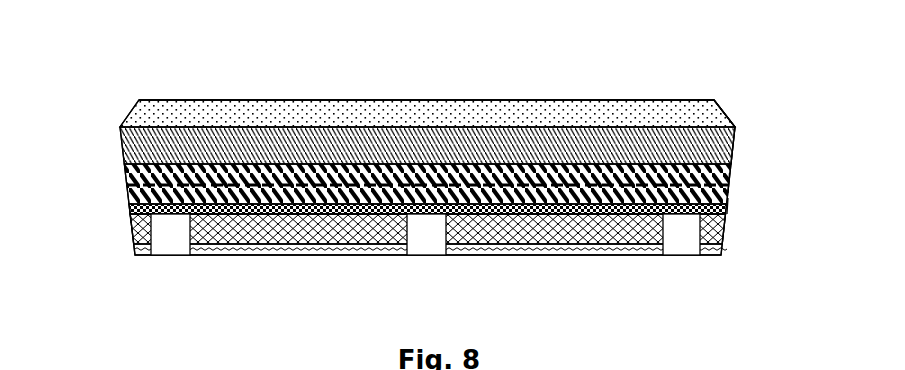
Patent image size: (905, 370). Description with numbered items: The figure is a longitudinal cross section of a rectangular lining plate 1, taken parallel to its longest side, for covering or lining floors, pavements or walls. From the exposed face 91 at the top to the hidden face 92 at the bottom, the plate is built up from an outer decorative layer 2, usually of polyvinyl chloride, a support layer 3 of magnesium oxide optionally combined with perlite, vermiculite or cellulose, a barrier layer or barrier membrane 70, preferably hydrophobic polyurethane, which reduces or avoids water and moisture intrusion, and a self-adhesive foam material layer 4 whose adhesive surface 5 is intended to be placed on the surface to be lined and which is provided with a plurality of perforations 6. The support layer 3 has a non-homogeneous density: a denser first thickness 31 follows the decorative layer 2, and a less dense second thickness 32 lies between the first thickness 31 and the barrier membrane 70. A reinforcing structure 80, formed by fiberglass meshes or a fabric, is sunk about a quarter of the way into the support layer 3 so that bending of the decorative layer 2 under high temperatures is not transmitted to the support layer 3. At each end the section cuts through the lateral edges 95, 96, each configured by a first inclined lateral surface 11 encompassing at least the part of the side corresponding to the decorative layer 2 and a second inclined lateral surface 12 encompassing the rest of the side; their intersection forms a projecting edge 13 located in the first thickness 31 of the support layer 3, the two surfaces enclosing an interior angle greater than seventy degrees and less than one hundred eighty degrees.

The lining plate 1 is at (531, 43).
The outer decorative layer 2 is at (656, 105).
The support layer 3 is at (375, 161).
The self-adhesive foam material layer 4 is at (513, 228).
The adhesive surface 5 is at (628, 240).
The perforations 6 is at (297, 232).
The first inclined lateral surface 11 is at (720, 91).
The second inclined lateral surface 12 is at (730, 192).
The edge 13 is at (727, 121).
The first thickness 31 is at (141, 143).
The second thickness 32 is at (132, 167).
The barrier membrane 70 is at (568, 202).
The reinforcing structure 80 is at (362, 177).
The exposed face 91 is at (213, 83).
The hidden face 92 is at (218, 256).
The lateral edge 95 is at (77, 221).
The lateral edge 96 is at (778, 171).